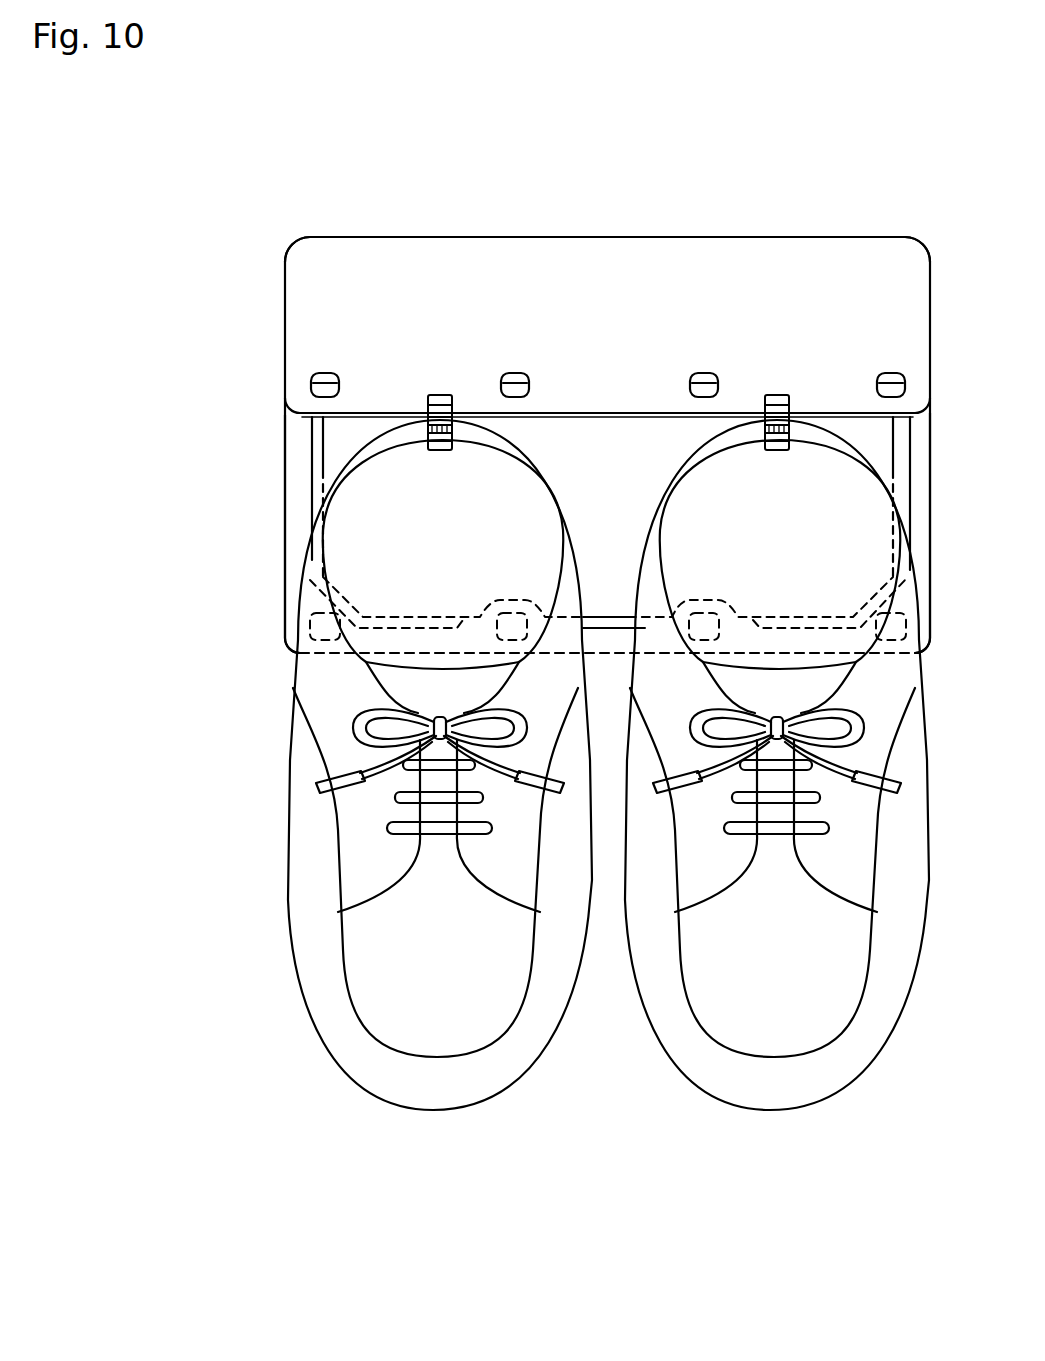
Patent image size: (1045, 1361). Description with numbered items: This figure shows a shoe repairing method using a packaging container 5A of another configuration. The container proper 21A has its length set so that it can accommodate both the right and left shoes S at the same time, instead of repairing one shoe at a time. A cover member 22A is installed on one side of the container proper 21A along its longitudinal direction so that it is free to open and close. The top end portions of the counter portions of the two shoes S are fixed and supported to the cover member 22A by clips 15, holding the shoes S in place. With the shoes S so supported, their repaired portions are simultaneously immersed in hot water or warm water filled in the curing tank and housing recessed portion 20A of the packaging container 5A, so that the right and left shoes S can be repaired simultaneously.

The packaging container 5A is at (655, 212).
The cover member 22A is at (513, 250).
The container proper 21A is at (267, 544).
The curing tank and housing recessed portion 20A is at (645, 479).
The clip 15 is at (440, 395).
The shoe S is at (381, 1130).